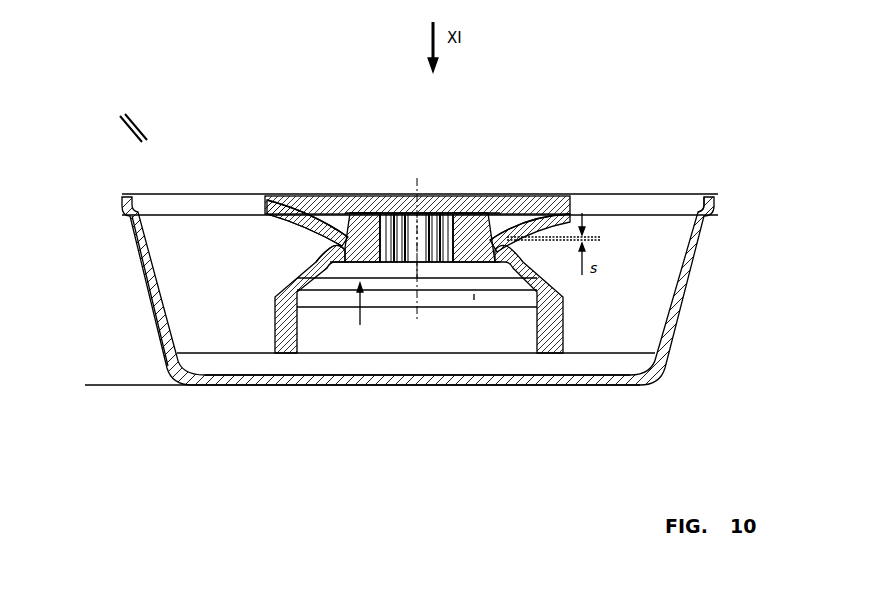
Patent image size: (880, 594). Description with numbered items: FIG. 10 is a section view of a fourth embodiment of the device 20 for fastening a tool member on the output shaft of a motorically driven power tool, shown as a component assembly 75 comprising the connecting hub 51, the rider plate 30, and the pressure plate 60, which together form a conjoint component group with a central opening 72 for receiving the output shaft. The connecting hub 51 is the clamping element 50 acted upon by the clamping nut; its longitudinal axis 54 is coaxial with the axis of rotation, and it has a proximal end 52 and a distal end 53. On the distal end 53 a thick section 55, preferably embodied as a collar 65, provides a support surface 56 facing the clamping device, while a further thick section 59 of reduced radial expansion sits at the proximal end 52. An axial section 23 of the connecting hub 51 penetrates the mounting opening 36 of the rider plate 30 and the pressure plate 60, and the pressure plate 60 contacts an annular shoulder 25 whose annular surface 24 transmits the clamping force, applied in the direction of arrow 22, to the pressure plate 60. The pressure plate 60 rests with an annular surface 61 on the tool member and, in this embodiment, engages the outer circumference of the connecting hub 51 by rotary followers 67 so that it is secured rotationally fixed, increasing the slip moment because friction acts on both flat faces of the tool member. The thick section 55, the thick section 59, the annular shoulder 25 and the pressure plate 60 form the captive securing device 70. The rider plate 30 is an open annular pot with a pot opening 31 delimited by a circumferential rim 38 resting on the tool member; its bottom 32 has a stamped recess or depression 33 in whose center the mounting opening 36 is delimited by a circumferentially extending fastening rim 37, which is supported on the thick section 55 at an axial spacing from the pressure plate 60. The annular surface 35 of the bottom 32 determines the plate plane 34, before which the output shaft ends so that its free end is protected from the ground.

The device 20 is at (288, 266).
The arrow 22 is at (474, 294).
The axial section 23 is at (378, 258).
The annular surface 24 is at (485, 236).
The annular shoulder 25 is at (290, 205).
The rider plate 30 is at (158, 321).
The pot opening 31 is at (621, 203).
The bottom 32 is at (431, 398).
The recess or depression 33 is at (360, 337).
The plate plane 34 is at (116, 387).
The annular surface 35 is at (218, 388).
The mounting opening 36 is at (493, 242).
The fastening rim 37 is at (519, 222).
The circumferential rim 38 is at (711, 193).
The clamping element 50 is at (442, 277).
The connecting hub 51 is at (375, 238).
The proximal end 52 is at (375, 240).
The distal end 53 is at (378, 263).
The longitudinal axis 54 is at (413, 180).
The thick section 55 is at (345, 225).
The support surface 56 is at (488, 264).
The thick section 59 is at (366, 216).
The pressure plate 60 is at (310, 212).
The annular surface 61 is at (557, 196).
The collar 65 is at (362, 246).
The rotary followers 67 is at (477, 232).
The captive securing device 70 is at (456, 190).
The central opening 72 is at (432, 170).
The component assembly 75 is at (158, 166).